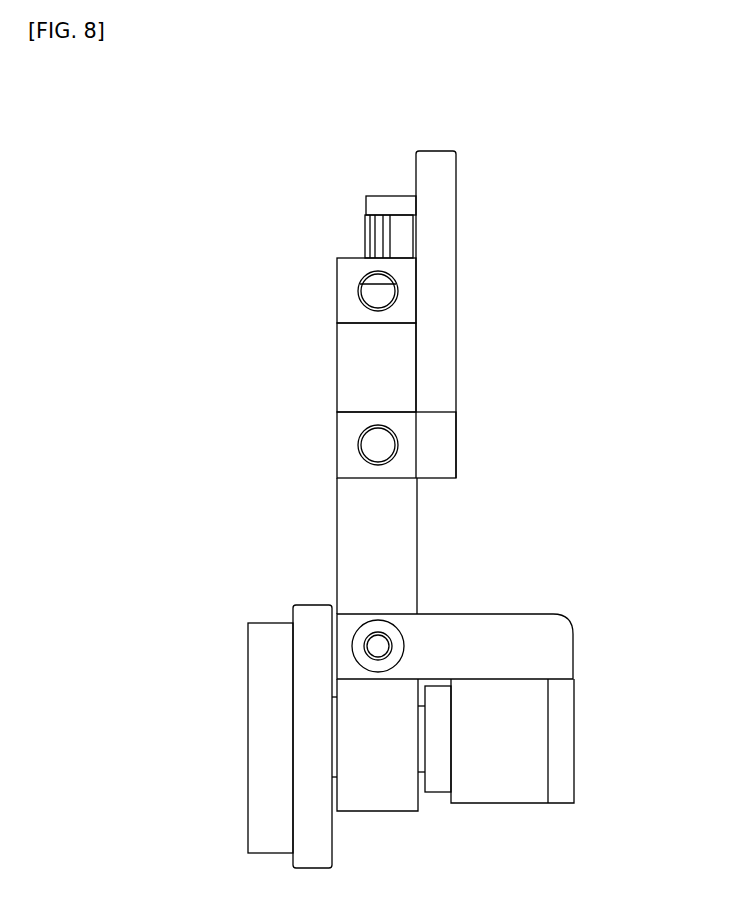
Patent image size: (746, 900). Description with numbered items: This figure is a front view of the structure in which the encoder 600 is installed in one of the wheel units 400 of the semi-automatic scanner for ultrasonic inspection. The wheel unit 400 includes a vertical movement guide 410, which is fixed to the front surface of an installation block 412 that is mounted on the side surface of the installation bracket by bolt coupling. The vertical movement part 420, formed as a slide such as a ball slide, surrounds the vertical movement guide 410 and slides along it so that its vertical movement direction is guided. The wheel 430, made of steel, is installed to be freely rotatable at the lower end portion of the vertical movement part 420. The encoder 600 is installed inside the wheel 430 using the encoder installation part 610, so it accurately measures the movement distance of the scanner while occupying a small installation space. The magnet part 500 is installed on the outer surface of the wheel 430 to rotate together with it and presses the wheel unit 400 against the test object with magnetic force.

The wheel unit 400 is at (512, 171).
The vertical movement guide 410 is at (403, 230).
The installation block 412 is at (435, 302).
The vertical movement part 420 is at (402, 546).
The wheel 430 is at (320, 838).
The magnet part 500 is at (266, 727).
The encoder 600 is at (522, 743).
The encoder installation part 610 is at (545, 645).